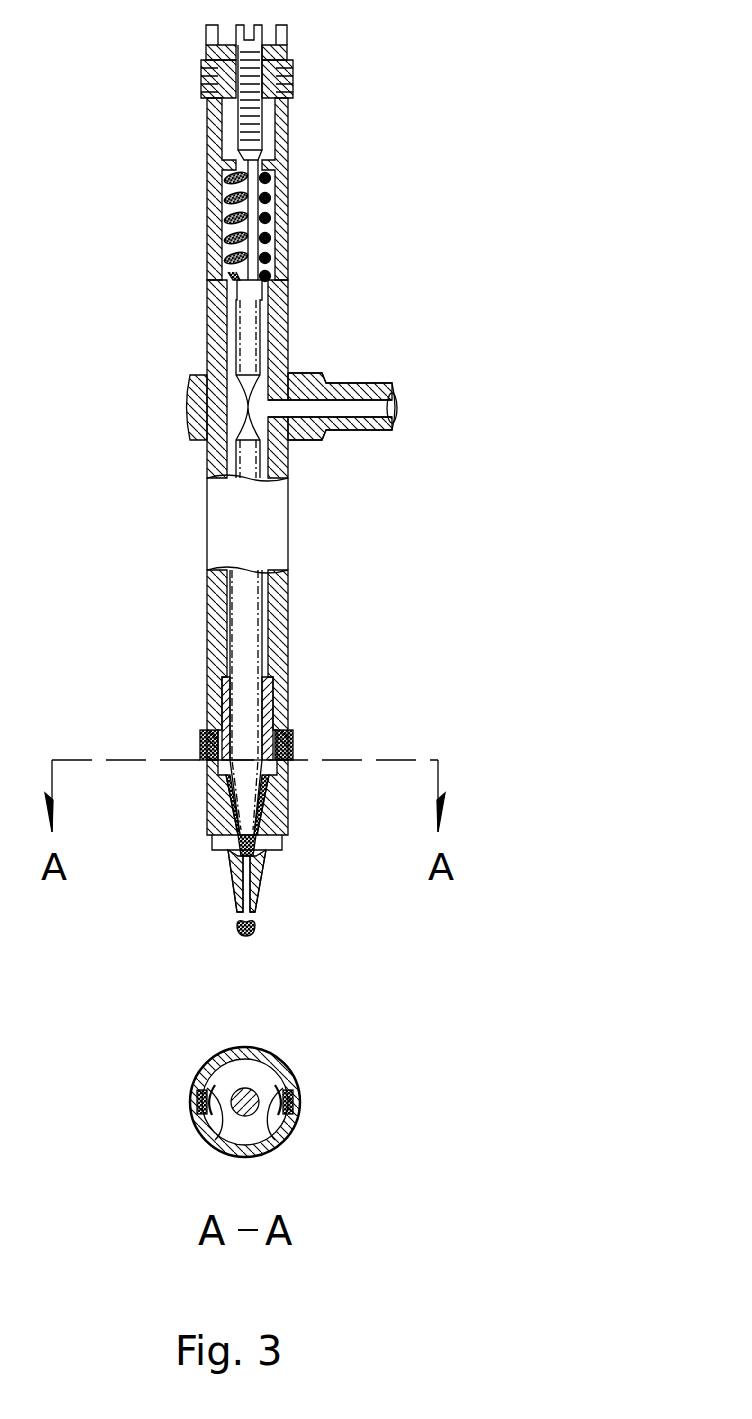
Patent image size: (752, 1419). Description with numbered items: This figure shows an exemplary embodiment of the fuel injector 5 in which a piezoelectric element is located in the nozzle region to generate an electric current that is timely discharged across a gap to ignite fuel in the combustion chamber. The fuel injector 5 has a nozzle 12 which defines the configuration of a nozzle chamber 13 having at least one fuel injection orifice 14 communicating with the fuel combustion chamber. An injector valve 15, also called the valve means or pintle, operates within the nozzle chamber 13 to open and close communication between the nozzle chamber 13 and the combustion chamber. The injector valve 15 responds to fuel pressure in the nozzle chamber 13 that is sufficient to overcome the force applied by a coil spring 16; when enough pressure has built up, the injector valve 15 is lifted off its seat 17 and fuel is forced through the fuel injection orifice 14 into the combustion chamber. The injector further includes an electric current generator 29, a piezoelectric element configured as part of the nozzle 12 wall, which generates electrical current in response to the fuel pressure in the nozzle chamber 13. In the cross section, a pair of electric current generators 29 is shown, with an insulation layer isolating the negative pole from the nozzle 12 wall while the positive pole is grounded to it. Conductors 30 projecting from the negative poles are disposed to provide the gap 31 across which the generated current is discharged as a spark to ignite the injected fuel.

The fuel injector 5 is at (289, 192).
The nozzle 12 is at (260, 893).
The nozzle chamber 13 is at (260, 725).
The fuel injection orifice 14 is at (232, 917).
The injector valve 15 is at (247, 652).
The coil spring 16 is at (232, 180).
The seat 17 is at (228, 866).
The electric current generator 29 is at (273, 780).
The conductor 30 is at (268, 1084).
The gap 31 is at (205, 1078).